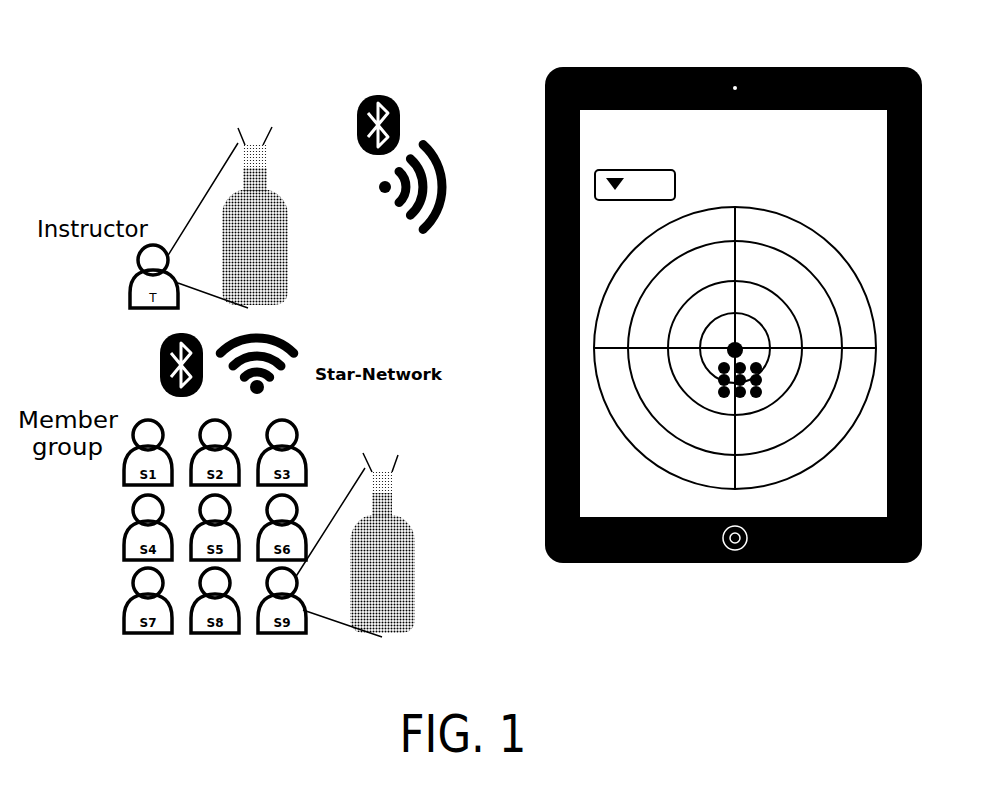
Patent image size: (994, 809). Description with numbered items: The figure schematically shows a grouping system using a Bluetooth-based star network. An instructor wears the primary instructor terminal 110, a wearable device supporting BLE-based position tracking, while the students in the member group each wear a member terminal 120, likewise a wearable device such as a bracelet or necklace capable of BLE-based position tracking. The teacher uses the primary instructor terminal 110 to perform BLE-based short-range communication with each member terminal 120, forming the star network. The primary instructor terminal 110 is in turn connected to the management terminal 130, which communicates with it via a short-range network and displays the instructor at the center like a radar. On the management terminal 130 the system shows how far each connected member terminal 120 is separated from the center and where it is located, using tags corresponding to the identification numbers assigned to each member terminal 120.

The primary instructor terminal 110 is at (356, 268).
The member terminal 120 is at (485, 592).
The management terminal 130 is at (764, 48).